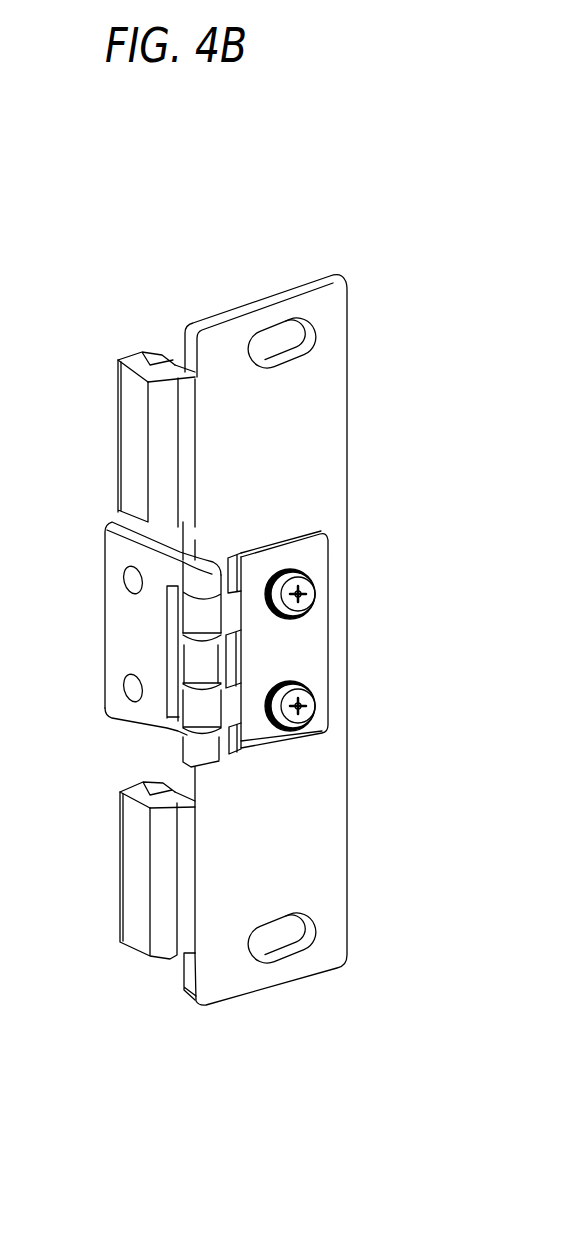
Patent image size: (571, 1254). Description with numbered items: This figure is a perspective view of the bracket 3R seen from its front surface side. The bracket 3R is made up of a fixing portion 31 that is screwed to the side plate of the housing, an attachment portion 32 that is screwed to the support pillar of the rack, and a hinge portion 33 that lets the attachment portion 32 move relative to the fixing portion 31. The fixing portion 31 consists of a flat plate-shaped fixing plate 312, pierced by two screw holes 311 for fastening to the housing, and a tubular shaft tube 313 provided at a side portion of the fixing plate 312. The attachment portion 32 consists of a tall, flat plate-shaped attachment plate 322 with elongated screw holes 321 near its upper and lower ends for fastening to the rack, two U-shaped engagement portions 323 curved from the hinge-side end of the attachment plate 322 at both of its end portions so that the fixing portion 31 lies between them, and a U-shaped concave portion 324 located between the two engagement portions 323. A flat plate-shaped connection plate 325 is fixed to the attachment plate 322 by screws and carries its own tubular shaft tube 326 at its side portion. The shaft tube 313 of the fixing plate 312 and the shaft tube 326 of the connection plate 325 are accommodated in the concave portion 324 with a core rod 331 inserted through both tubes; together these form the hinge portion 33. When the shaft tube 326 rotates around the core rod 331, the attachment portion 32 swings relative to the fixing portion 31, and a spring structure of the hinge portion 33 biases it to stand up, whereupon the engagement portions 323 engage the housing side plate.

The bracket 3R is at (343, 207).
The attachment portion 32 is at (348, 447).
The attachment plate 322 is at (292, 418).
The screw holes 321 is at (285, 322).
The engagement portions 323 is at (120, 358).
The fixing portion 31 is at (117, 617).
The fixing plate 312 is at (130, 638).
The screw holes 311 is at (125, 584).
The shaft tube 313 is at (208, 575).
The hinge portion 33 is at (198, 663).
The connection plate 325 is at (298, 647).
The core rod 331 is at (228, 552).
The concave portion 324 is at (230, 760).
The shaft tube 326 is at (208, 613).